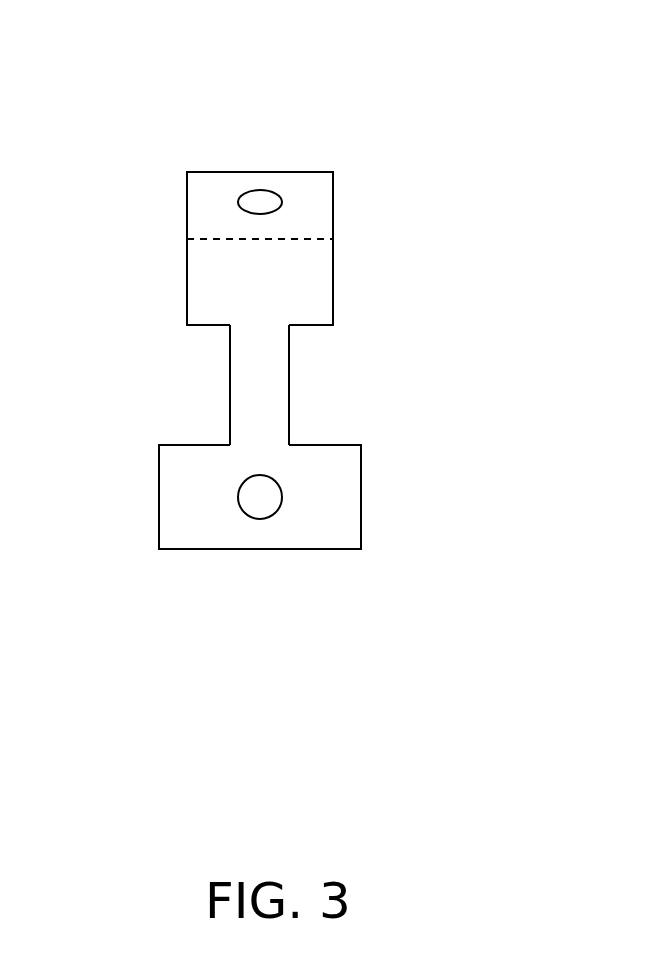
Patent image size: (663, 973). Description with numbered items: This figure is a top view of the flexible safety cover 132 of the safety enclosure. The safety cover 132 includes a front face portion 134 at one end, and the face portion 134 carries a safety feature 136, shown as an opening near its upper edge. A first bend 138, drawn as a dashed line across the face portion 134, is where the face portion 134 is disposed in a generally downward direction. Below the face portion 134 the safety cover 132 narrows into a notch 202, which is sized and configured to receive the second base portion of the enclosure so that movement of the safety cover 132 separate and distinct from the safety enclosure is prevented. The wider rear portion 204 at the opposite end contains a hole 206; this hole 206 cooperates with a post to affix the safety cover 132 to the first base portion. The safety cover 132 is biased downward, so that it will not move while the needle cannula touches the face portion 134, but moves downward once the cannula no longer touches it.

The flexible safety cover 132 is at (396, 72).
The face portion 134 is at (200, 190).
The safety feature 136 is at (262, 200).
The bend 138 is at (190, 243).
The notch 202 is at (210, 378).
The rear portion 204 is at (338, 500).
The hole 206 is at (260, 497).